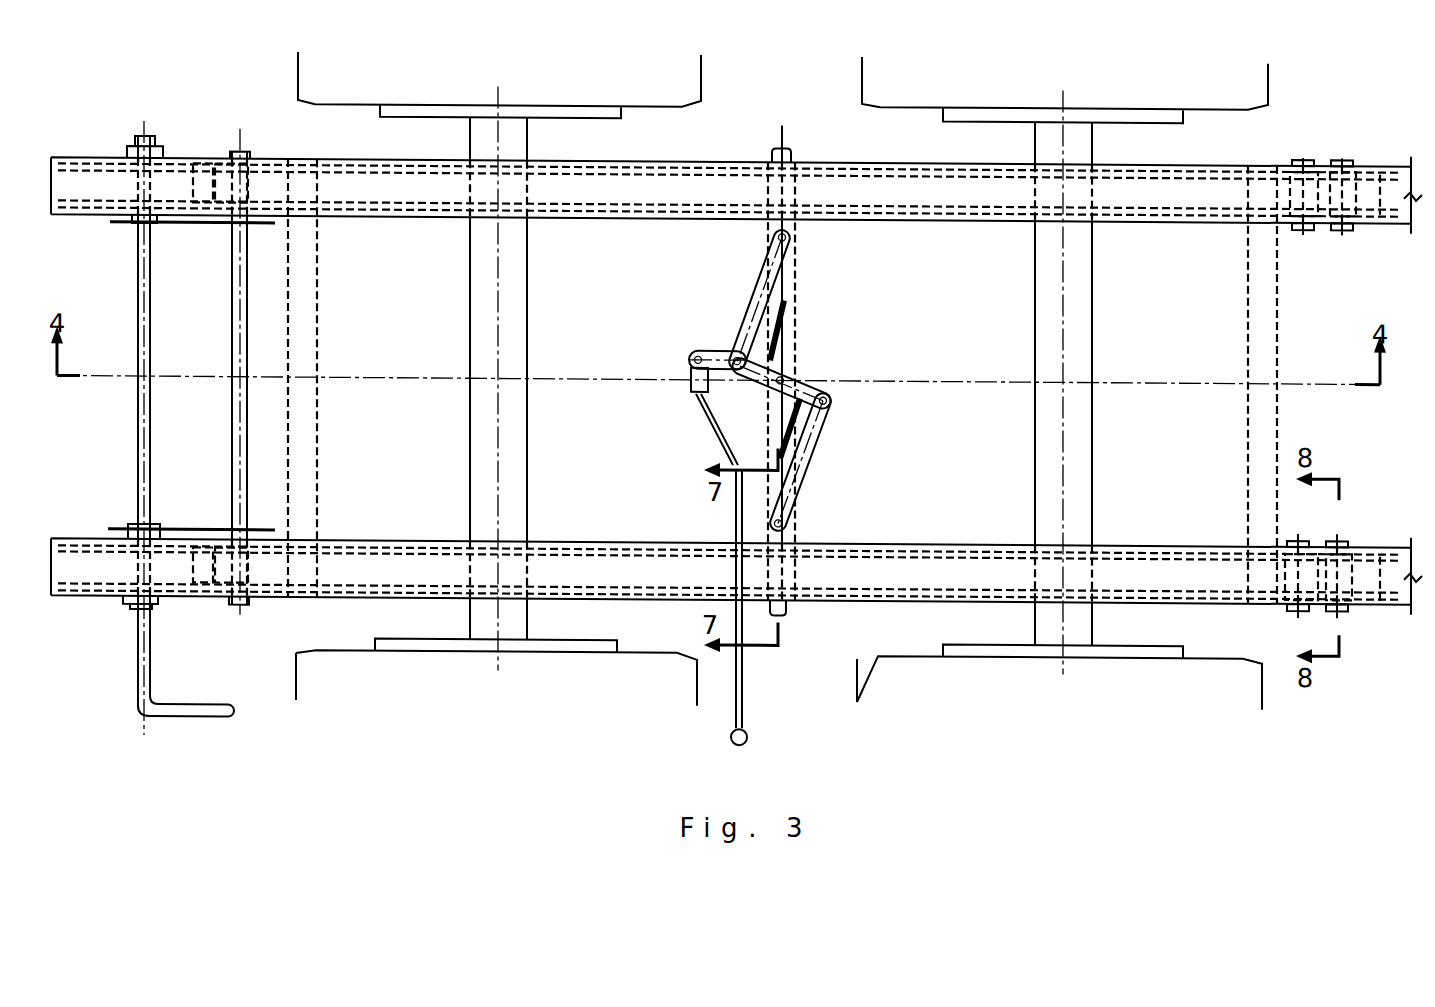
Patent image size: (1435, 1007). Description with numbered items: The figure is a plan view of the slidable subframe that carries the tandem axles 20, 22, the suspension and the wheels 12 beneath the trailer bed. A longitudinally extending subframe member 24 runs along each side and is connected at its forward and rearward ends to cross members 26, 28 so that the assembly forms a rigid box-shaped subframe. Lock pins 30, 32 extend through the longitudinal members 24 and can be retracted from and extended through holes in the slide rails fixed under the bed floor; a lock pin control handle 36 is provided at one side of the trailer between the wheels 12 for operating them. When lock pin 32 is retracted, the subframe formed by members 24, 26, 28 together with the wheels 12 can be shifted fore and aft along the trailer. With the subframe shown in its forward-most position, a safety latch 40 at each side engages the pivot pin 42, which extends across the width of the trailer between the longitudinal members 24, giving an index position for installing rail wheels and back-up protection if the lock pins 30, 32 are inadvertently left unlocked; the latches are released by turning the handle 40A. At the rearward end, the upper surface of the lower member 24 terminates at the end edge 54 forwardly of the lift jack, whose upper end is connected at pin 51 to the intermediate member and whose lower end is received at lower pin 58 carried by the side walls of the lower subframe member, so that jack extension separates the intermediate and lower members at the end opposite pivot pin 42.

The wheels 12 is at (701, 92).
The tandem axle 20 is at (528, 318).
The tandem axle 22 is at (1092, 330).
The longitudinally extending subframe member 24 is at (603, 221).
The cross member 26 is at (317, 320).
The cross member 28 is at (1278, 305).
The lock pin 30 is at (792, 150).
The lock pin 32 is at (788, 606).
The lock pin control handle 36 is at (746, 712).
The safety latch 40 is at (172, 229).
The handle 40A is at (173, 707).
The pivot pin 42 is at (247, 465).
The pin 51 is at (1345, 155).
The end edge 54 is at (1290, 556).
The lower pin 58 is at (1305, 155).